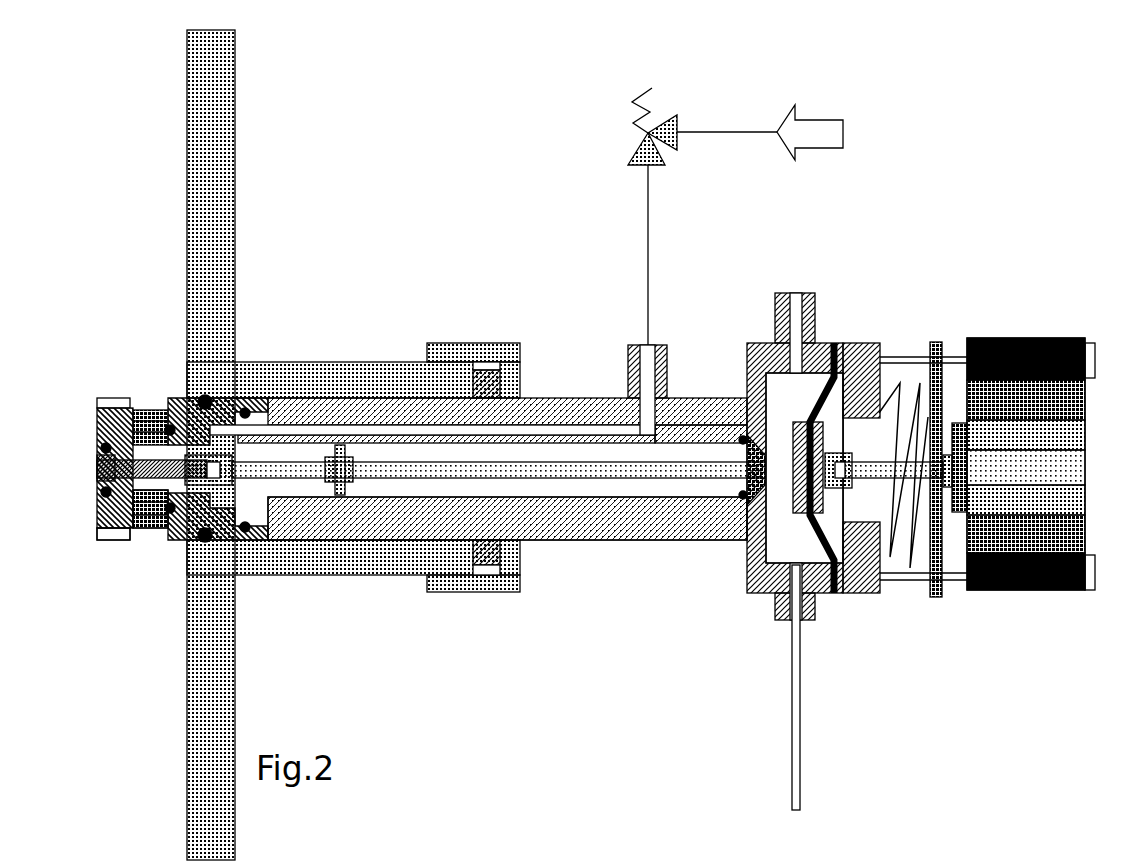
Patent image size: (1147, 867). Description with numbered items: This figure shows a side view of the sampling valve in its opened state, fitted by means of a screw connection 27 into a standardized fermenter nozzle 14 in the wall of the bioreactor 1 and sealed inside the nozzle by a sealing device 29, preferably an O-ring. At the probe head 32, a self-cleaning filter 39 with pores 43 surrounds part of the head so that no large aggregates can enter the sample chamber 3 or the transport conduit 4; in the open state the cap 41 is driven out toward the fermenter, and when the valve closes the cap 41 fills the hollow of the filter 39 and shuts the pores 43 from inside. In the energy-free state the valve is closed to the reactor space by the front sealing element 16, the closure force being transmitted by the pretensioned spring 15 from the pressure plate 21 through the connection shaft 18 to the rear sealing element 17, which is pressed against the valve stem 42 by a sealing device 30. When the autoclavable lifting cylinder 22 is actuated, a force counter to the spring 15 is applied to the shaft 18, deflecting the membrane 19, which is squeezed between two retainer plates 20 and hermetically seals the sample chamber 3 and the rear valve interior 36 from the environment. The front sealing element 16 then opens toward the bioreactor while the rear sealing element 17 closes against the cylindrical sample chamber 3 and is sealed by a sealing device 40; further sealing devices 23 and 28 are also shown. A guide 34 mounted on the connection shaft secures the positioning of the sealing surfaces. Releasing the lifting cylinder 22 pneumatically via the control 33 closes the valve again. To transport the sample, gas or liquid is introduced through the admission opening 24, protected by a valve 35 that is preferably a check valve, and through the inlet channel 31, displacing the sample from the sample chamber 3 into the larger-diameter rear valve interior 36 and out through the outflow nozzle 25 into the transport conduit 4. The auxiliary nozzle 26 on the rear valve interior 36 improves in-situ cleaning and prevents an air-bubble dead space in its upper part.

The bioreactor 1 is at (162, 243).
The sample chamber 3 is at (527, 488).
The transport conduit 4 is at (800, 705).
The standardized fermenter nozzle 14 is at (318, 563).
The spring 15 is at (912, 557).
The front sealing element 16 is at (97, 477).
The rear sealing element 17 is at (758, 467).
The connection shaft 18 is at (657, 473).
The membrane 19 is at (826, 435).
The retainer plate 20 is at (868, 350).
The pressure plate 21 is at (940, 343).
The lifting cylinder 22 is at (1005, 565).
The sealing device 23 is at (743, 497).
The admission opening 24 is at (648, 352).
The outflow nozzle 25 is at (788, 640).
The auxiliary nozzle 26 is at (782, 292).
The screw connection 27 is at (483, 348).
The sealing device 28 is at (243, 530).
The sealing device 29 is at (203, 540).
The sealing device 30 is at (162, 540).
The inlet channel 31 is at (353, 428).
The probe head 32 is at (190, 417).
The control 33 is at (1091, 352).
The guide mounted on connection shaft 34 is at (340, 472).
The valve 35 is at (637, 148).
The rear valve interior 36 is at (784, 388).
The filter 39 is at (165, 420).
The sealing device 40 is at (92, 530).
The cap 41 is at (98, 425).
The valve stem 42 is at (602, 540).
The pores 43 is at (138, 540).